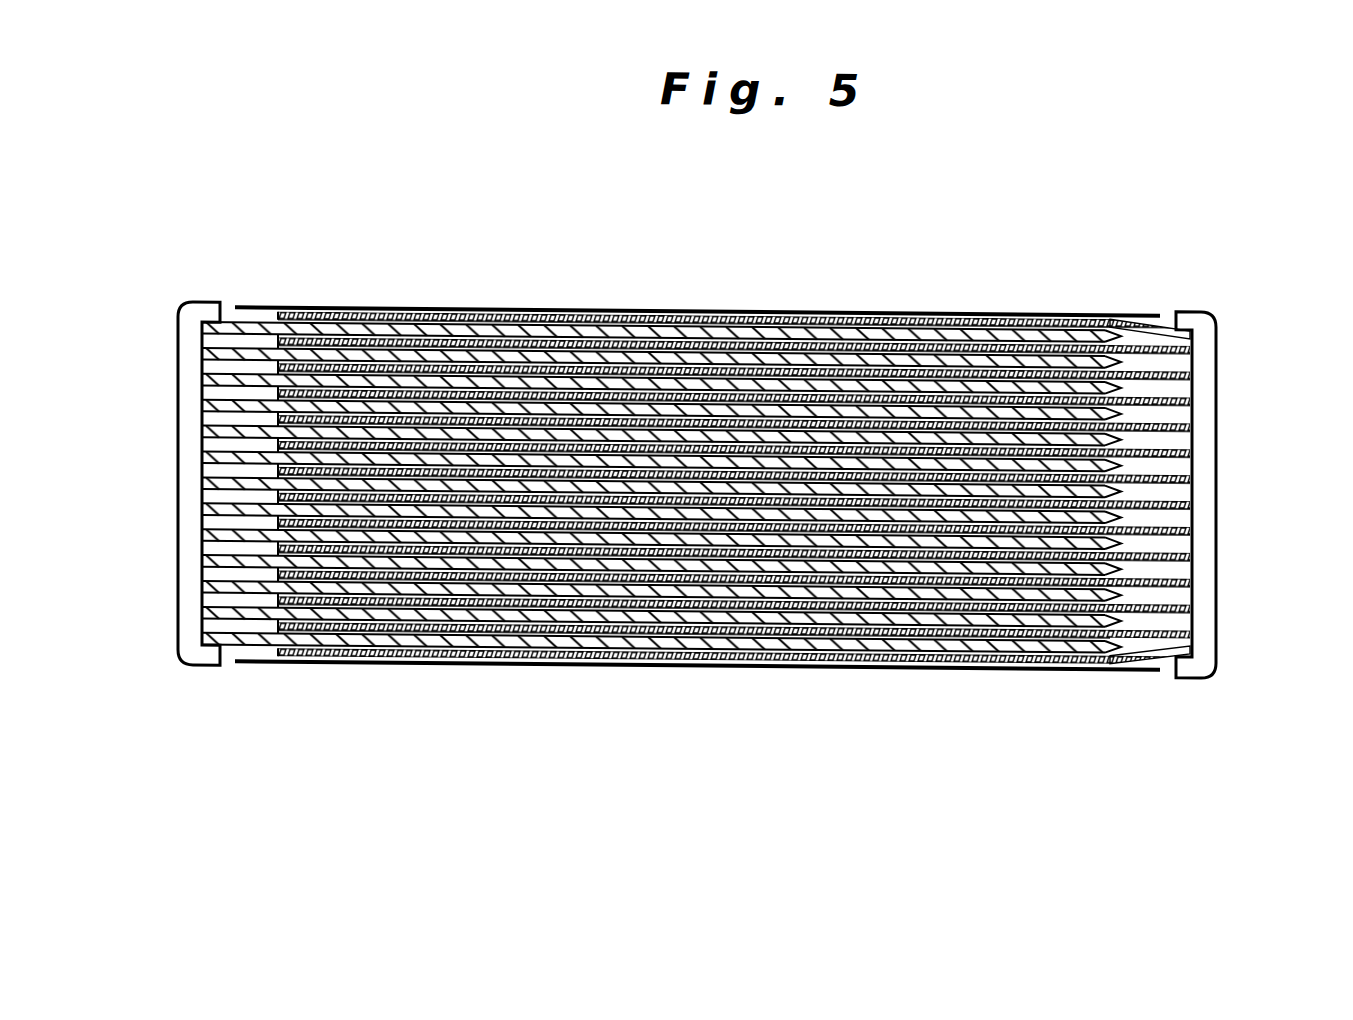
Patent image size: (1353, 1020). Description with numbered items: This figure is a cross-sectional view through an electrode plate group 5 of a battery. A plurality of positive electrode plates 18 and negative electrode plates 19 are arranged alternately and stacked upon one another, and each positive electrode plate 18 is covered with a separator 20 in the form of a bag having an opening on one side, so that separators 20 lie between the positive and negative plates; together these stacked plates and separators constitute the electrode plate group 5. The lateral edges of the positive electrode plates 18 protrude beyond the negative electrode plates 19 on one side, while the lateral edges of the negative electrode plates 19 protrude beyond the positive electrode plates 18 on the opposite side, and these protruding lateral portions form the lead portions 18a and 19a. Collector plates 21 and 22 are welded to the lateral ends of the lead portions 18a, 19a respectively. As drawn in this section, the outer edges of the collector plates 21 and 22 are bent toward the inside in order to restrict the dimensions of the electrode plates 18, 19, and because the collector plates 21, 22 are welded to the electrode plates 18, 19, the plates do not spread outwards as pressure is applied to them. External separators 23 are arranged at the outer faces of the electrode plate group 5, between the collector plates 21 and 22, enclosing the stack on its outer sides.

The electrode plate group 5 is at (284, 242).
The positive electrode plate 18 is at (610, 352).
The lead portion 18a is at (235, 397).
The negative electrode plate 19 is at (887, 349).
The lead portion 19a is at (1163, 392).
The separator 20 is at (742, 344).
The collector plate 21 is at (193, 486).
The collector plate 22 is at (1205, 563).
The external separator 23 is at (460, 306).